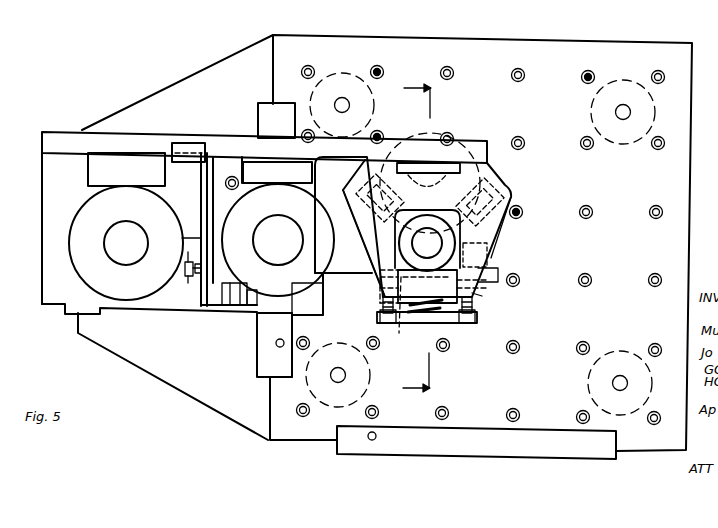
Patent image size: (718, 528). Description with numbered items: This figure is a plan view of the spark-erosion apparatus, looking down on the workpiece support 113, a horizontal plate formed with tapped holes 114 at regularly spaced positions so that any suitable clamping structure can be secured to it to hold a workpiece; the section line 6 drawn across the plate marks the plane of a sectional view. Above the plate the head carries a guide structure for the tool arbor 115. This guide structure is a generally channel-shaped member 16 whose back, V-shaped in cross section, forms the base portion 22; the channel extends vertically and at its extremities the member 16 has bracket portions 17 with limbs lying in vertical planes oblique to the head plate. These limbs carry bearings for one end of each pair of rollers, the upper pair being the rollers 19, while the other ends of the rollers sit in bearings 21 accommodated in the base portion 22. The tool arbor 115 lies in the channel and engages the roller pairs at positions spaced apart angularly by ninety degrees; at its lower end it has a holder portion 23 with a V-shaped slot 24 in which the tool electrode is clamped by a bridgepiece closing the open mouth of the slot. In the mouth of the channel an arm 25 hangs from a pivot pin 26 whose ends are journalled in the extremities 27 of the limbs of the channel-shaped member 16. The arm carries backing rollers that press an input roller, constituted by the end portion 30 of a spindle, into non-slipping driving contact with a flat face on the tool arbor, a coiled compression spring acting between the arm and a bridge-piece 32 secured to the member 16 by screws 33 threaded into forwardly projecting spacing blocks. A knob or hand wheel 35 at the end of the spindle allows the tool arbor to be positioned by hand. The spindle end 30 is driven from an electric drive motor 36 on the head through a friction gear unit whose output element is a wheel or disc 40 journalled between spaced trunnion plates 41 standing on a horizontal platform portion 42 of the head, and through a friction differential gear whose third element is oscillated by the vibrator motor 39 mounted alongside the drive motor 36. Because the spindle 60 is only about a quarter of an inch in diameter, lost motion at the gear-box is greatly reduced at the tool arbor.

The workpiece support 113 is at (470, 39).
The tapped holes 114 is at (522, 72).
The section line 6- 6 is at (417, 241).
The electric drive motor 36 is at (85, 270).
The horizontal platform portion 42 is at (163, 300).
The trunnion plates 41 is at (212, 300).
The wheel or disc 40 is at (230, 283).
The vibrator motor 39 is at (292, 283).
The spindle 60 is at (347, 271).
The bracket portions 17 is at (516, 186).
The channel-shaped member 16 is at (360, 231).
The upper pair of rollers 19 is at (399, 148).
The base portion 22 is at (428, 159).
The bearings 21 is at (427, 190).
The tool arbor 115 is at (443, 237).
The V-shaped slot 24 is at (498, 258).
The holder portion 23 is at (490, 272).
The spindle end portion 30 is at (383, 277).
The extremities of the limbs 27 is at (382, 294).
The bridge-piece 32 is at (423, 318).
The screws 33 is at (387, 324).
The arm 25 is at (442, 290).
The pivot pin 26 is at (399, 333).
The knob or hand wheel 35 is at (481, 295).